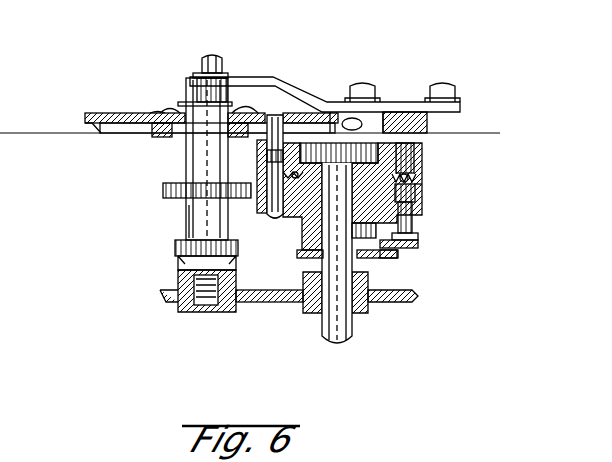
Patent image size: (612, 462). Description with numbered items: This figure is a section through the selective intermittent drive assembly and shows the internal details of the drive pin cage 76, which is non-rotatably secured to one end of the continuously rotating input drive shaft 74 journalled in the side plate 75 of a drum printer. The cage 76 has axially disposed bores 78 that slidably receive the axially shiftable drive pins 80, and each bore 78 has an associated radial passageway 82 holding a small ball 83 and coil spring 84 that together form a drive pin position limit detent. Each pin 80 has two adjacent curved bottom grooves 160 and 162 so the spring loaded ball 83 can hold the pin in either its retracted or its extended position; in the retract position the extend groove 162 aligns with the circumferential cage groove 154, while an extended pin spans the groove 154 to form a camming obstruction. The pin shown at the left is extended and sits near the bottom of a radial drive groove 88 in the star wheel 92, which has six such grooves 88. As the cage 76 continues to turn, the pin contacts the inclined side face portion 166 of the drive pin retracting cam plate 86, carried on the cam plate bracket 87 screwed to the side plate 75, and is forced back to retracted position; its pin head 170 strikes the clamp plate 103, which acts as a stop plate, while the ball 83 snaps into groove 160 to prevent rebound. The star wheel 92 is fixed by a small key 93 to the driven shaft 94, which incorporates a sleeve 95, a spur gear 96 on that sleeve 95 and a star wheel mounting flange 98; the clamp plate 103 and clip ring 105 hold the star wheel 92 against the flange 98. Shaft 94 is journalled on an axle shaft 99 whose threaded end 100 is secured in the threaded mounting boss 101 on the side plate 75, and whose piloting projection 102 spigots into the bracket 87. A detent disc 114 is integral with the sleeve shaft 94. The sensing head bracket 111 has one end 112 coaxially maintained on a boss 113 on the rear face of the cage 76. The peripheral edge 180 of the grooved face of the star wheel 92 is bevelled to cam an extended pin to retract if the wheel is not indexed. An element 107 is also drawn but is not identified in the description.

The input drive shaft 74 is at (350, 336).
The side plate 75 is at (264, 302).
The drive pin cage 76 is at (420, 210).
The axially disposed bores 78 is at (414, 160).
The drive pins 80 is at (286, 128).
The radial passageways 82 is at (418, 177).
The balls 83 is at (420, 184).
The coil springs 84 is at (418, 196).
The drive pin retracting cam plate 86 is at (428, 125).
The cam plate bracket 87 is at (300, 90).
The radial drive groove 88 is at (115, 129).
The star wheel 92 is at (160, 114).
The key 93 is at (188, 103).
The driven shaft 94 is at (186, 173).
The sleeve 95 is at (186, 223).
The spur gear 96 is at (176, 246).
The star wheel mounting flange 98 is at (162, 138).
The axle shaft 99 is at (196, 86).
The threaded end 100 is at (180, 285).
The threaded mounting boss 101 is at (178, 268).
The piloting projection 102 is at (222, 60).
The clamp plate 103 is at (172, 112).
The clip ring 105 is at (226, 103).
The plate 107 is at (425, 247).
The bracket 111 is at (400, 256).
The bracket end 112 is at (300, 257).
The boss 113 is at (362, 258).
The detent disc 114 is at (172, 198).
The circumferential groove 154 is at (425, 200).
The retract position detent groove 160 is at (266, 153).
The extend position detent groove 162 is at (268, 178).
The inclined side face portion 166 is at (362, 120).
The pin head 170 is at (264, 222).
The peripheral edge 180 is at (89, 124).